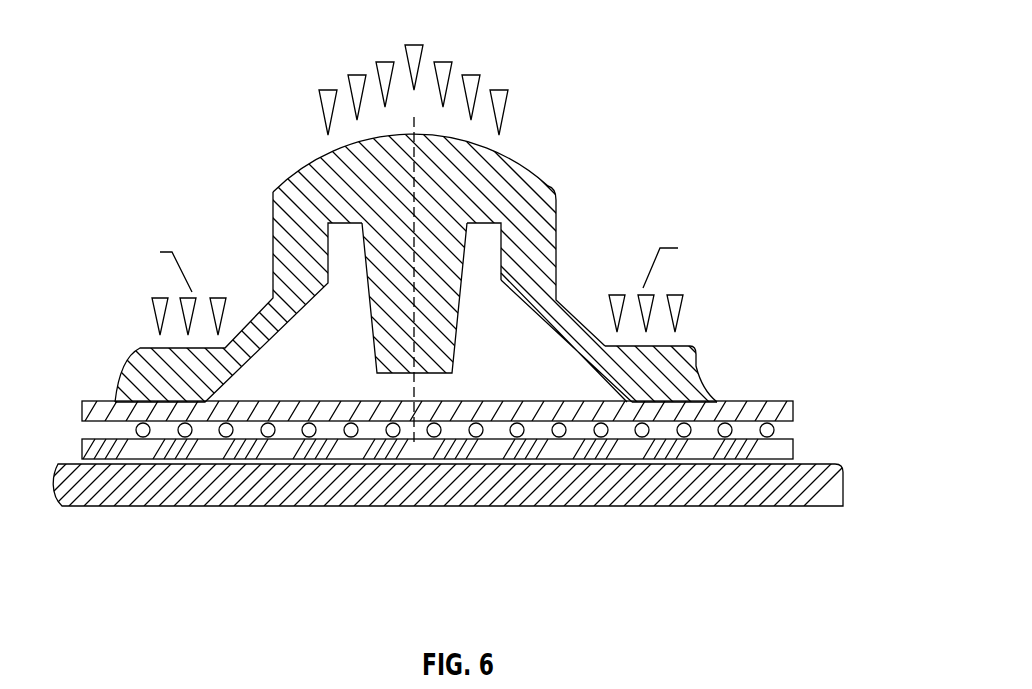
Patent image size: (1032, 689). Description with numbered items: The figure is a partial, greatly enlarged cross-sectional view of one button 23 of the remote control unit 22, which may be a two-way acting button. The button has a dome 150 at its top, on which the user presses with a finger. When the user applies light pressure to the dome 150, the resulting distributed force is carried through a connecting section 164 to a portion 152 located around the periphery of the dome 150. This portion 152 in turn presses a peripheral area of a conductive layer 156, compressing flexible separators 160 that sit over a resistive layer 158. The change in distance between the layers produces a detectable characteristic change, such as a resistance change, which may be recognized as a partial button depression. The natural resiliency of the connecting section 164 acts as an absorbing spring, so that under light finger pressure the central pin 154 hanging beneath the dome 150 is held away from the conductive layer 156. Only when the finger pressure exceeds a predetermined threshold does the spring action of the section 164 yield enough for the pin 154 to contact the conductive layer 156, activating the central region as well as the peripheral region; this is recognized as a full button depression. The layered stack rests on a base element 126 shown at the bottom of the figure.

The remote control unit 22 is at (143, 180).
The button 23 is at (495, 170).
The dome 150 is at (313, 162).
The portion around the periphery of the dome 152 is at (690, 343).
The central pin 154 is at (370, 313).
The conductive layer 156 is at (738, 401).
The resistive layer 158 is at (787, 437).
The flexible separators 160 is at (558, 440).
The connecting section 164 is at (563, 303).
The base plate 126 is at (168, 510).